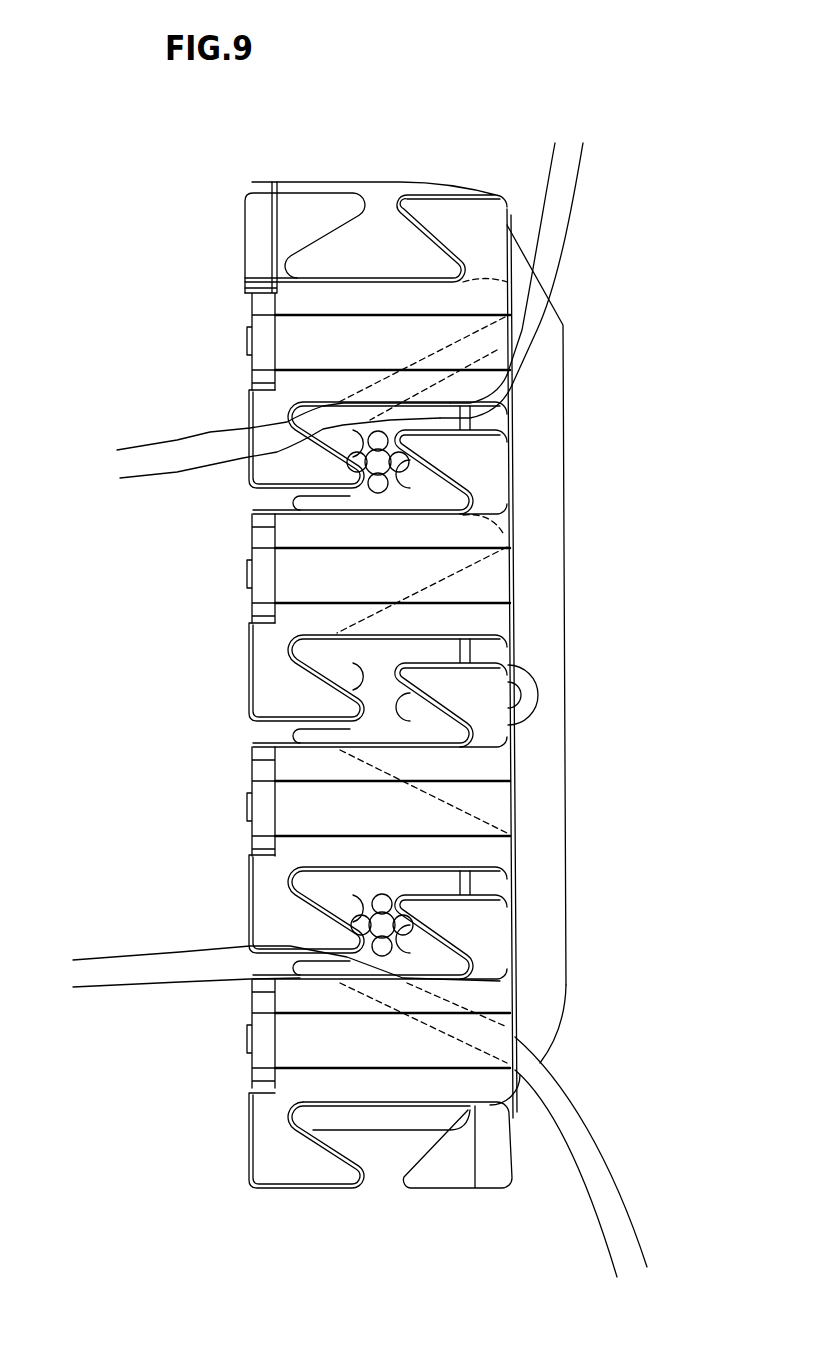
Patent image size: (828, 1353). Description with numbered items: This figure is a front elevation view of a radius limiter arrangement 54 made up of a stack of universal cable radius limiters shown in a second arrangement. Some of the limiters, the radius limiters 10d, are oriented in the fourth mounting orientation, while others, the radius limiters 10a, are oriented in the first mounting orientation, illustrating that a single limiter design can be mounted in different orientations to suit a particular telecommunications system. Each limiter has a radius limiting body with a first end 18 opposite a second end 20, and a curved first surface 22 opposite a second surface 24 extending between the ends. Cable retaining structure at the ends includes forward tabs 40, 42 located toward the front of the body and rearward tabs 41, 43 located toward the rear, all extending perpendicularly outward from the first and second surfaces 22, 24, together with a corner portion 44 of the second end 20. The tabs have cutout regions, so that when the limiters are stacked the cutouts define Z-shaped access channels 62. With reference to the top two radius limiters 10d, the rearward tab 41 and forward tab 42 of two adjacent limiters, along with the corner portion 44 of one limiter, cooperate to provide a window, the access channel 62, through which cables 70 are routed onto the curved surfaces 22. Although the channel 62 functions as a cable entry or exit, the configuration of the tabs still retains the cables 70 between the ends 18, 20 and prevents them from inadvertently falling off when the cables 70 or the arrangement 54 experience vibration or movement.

The radius limiter 10d is at (218, 204).
The radius limiter 10a is at (215, 915).
The first end 18 is at (493, 572).
The second end 20 is at (480, 855).
The first surface 22 is at (585, 970).
The second surface 24 is at (368, 278).
The forward tab 40 is at (484, 695).
The rearward tab 41 is at (267, 465).
The forward tab 42 is at (488, 462).
The rearward tab 43 is at (277, 917).
The corner portion 44 is at (488, 385).
The radius limiter arrangement 54 is at (612, 158).
The access channel 62 is at (443, 467).
The cables 70 is at (567, 235).